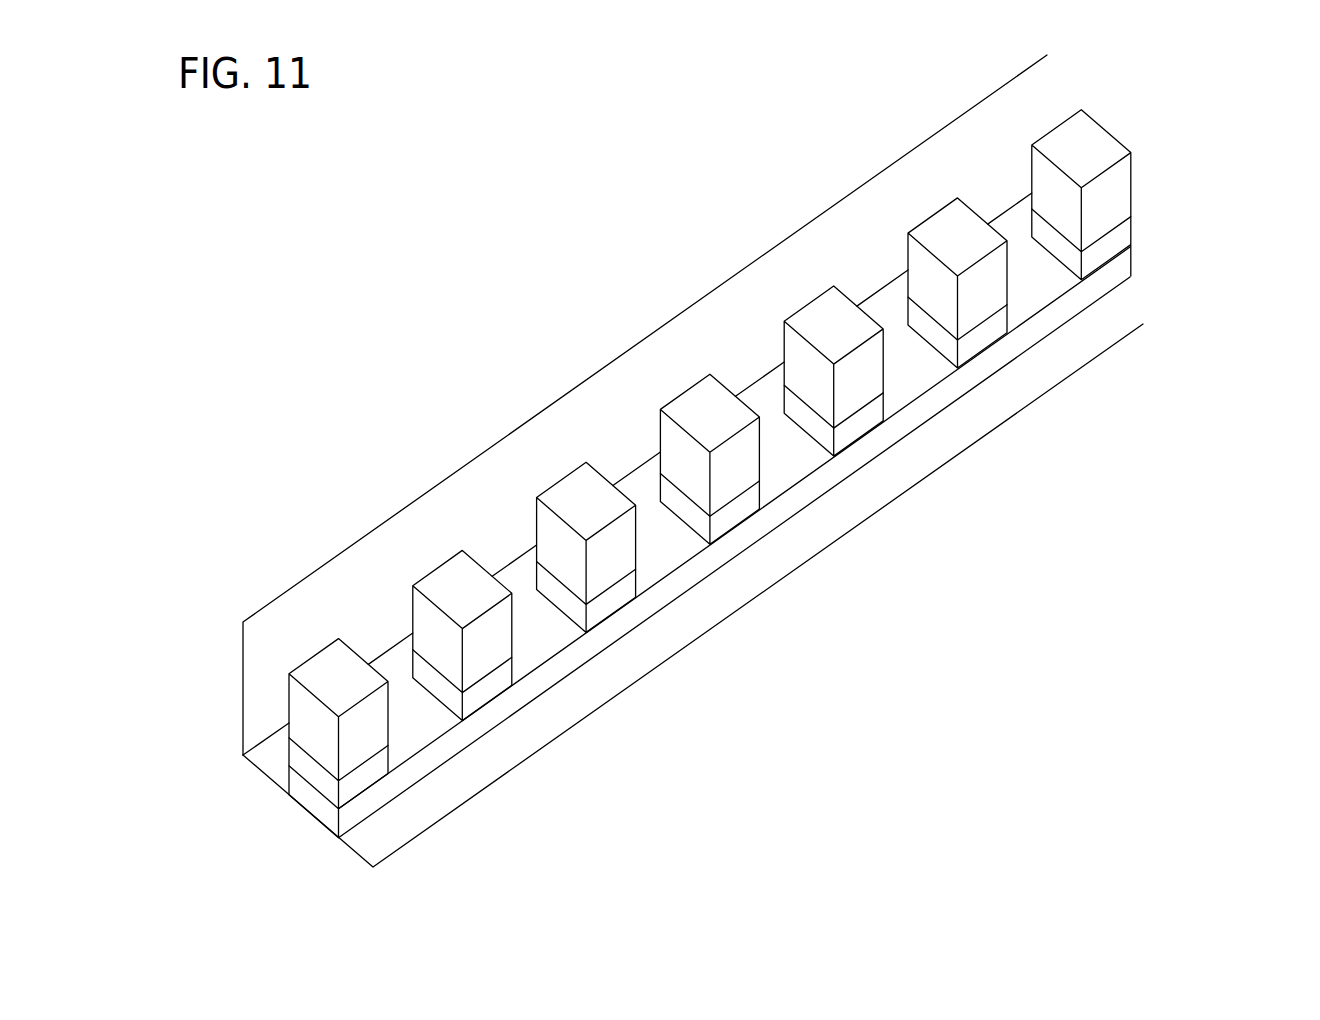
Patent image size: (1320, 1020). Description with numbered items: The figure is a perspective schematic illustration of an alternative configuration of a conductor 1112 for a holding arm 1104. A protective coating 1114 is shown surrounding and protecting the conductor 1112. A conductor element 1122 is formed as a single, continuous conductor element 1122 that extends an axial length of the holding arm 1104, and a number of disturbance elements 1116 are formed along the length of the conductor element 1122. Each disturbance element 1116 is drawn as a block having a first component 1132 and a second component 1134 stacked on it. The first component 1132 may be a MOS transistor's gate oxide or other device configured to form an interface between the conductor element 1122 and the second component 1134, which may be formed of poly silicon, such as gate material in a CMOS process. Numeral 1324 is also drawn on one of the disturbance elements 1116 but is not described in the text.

The holding arm 1104 is at (437, 304).
The conductor 1112 is at (857, 493).
The protective coating 1114 is at (258, 668).
The disturbance elements 1116 is at (393, 612).
The conductor element 1122 is at (562, 671).
The first component 1132 is at (987, 337).
The second component 1134 is at (945, 224).
The bonding layer 1324 is at (735, 517).